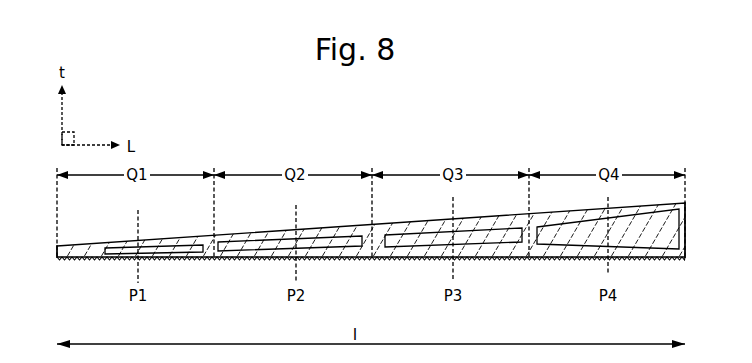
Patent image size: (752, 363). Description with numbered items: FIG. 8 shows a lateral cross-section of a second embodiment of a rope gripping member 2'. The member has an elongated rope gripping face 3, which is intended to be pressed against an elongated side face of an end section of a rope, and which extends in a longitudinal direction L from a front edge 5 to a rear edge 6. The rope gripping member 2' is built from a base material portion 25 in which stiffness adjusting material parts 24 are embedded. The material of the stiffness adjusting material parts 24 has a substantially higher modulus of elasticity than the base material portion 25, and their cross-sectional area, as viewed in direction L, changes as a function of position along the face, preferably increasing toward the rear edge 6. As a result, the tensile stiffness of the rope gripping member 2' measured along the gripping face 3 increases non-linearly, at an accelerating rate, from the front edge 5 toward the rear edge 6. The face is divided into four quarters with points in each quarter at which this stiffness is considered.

The rope gripping member 2' is at (379, 147).
The rope gripping face 3 is at (268, 259).
The front edge 5 is at (56, 257).
The rear edge 6 is at (686, 257).
The stiffness adjusting material parts 24 is at (168, 247).
The base material portion 25 is at (407, 227).